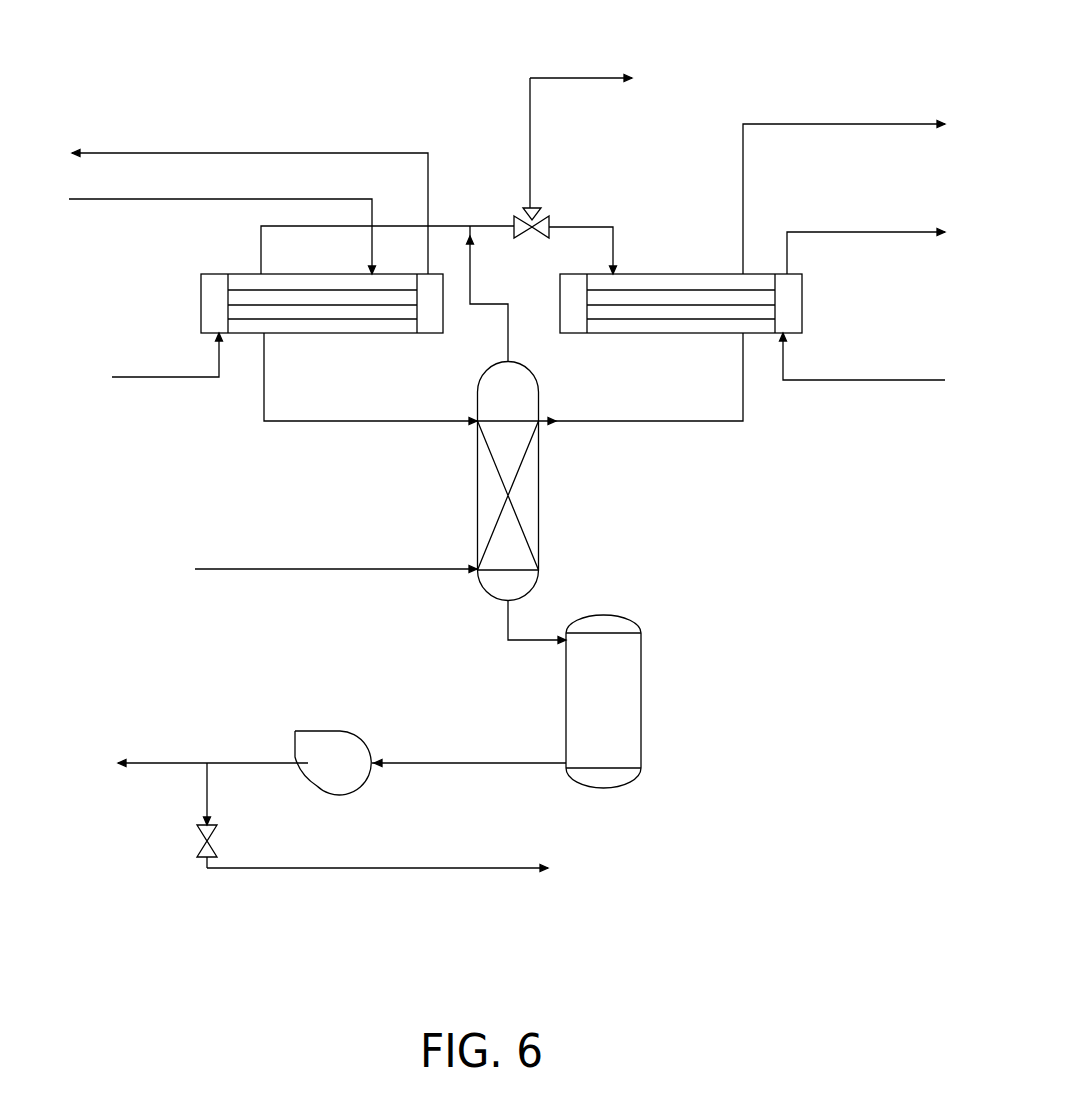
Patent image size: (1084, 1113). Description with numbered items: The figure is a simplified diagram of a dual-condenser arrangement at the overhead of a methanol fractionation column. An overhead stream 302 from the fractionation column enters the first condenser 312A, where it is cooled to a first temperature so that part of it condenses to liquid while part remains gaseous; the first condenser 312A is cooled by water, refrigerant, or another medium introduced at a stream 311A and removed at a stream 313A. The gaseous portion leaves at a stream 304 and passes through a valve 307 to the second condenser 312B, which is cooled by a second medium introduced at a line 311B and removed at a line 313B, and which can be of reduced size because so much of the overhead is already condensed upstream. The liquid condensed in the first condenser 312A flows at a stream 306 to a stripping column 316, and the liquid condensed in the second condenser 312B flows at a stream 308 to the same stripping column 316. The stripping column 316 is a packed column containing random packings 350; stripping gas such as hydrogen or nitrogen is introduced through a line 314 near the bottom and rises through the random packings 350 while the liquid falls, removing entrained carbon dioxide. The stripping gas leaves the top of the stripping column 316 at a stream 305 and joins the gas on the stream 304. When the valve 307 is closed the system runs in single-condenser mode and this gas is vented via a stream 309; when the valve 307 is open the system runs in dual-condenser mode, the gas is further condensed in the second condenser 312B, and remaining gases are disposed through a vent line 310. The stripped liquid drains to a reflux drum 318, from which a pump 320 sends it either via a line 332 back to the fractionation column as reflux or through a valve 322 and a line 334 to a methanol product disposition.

The overhead stream 302 is at (110, 200).
The stream 304 is at (448, 226).
The stream 305 is at (507, 330).
The stream 306 is at (263, 405).
The valve 307 is at (541, 212).
The stream 308 is at (745, 410).
The stream 309 is at (565, 78).
The vent line 310 is at (828, 124).
The stream 311A is at (130, 378).
The line 311B is at (900, 380).
The first condenser 312A is at (200, 317).
The second condenser 312B is at (674, 274).
The stream 313A is at (224, 153).
The line 313B is at (850, 232).
The line 314 is at (260, 569).
The stripping column 316 is at (477, 548).
The reflux drum 318 is at (641, 715).
The pump 320 is at (378, 775).
The valve 322 is at (200, 852).
The line 332 is at (155, 762).
The line 334 is at (475, 868).
The random packings 350 is at (540, 532).